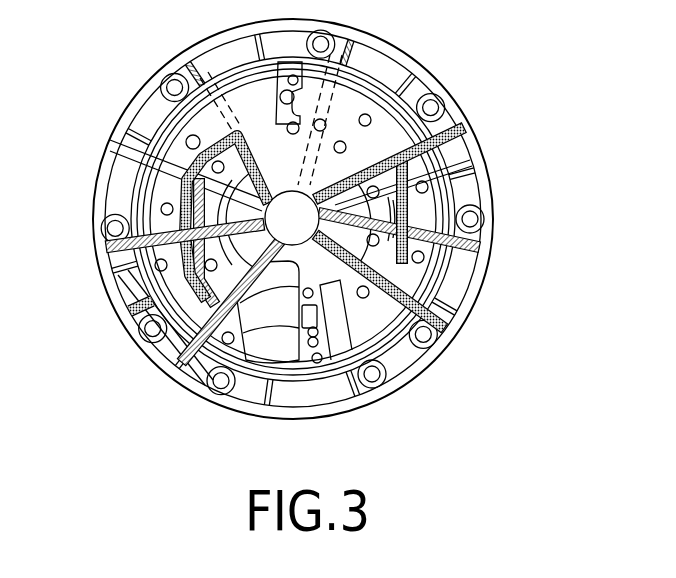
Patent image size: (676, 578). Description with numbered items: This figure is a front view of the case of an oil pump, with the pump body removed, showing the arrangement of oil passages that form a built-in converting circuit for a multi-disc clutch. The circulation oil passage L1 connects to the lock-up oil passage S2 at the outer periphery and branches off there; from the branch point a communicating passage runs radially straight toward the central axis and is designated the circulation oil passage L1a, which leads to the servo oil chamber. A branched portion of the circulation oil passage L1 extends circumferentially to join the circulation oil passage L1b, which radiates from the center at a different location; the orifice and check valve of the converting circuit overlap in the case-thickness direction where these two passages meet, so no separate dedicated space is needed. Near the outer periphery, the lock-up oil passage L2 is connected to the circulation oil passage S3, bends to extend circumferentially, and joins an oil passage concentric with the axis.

The circulation oil passage L1 is at (433, 331).
The circulation oil passage leading to the servo oil chamber L1a is at (345, 255).
The circulation oil passage L1b is at (350, 180).
The lock-up oil passage L2 is at (170, 262).
The lock-up oil passage S2 is at (437, 303).
The circulation oil passage S3 is at (133, 313).